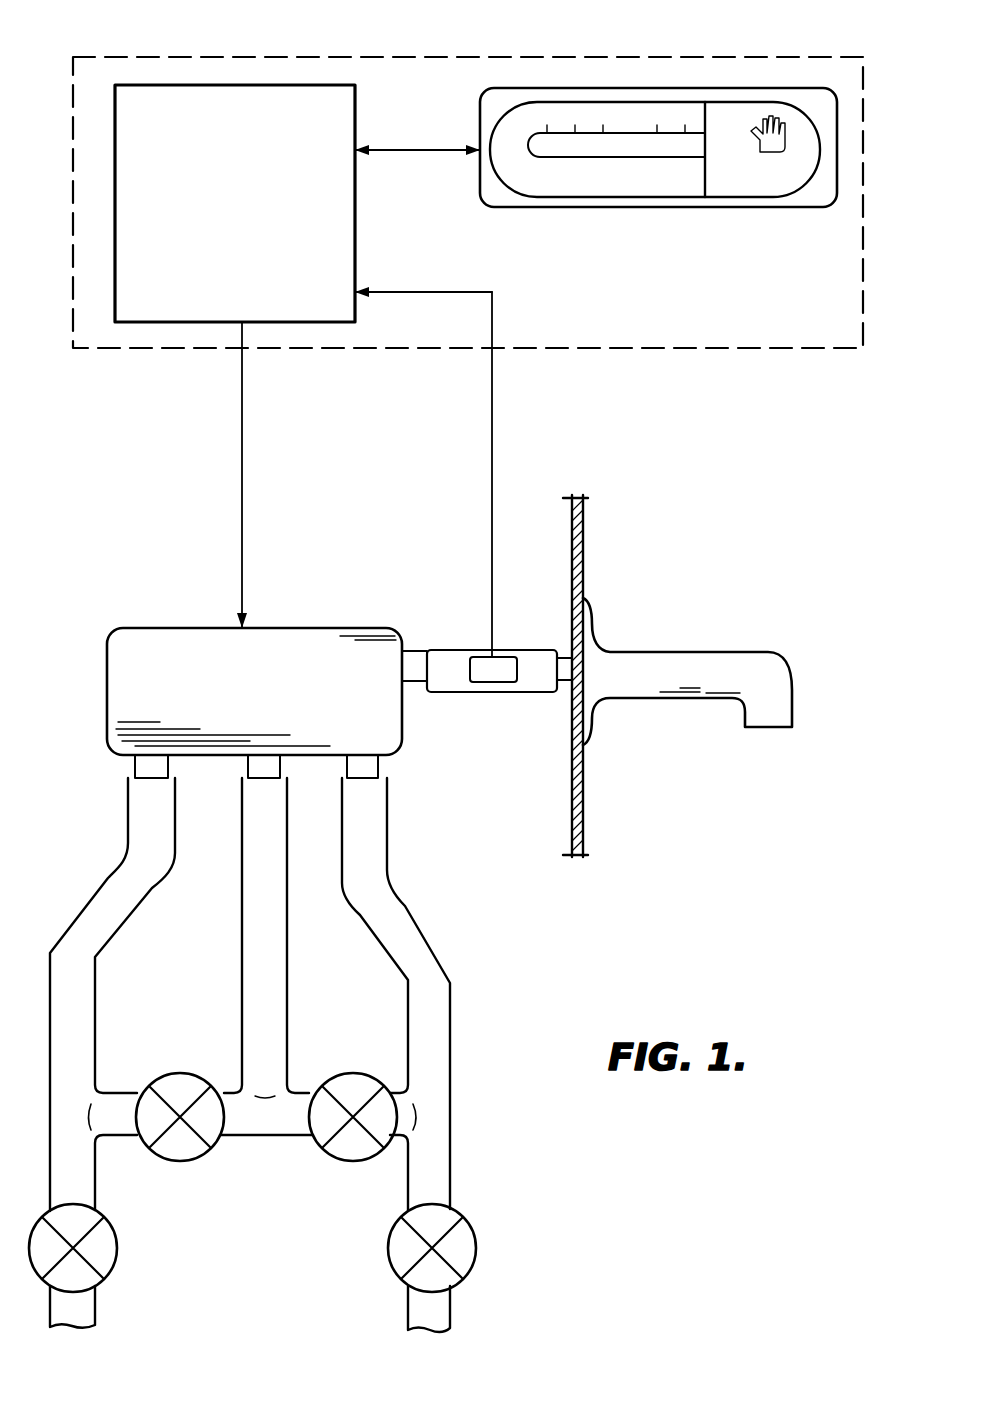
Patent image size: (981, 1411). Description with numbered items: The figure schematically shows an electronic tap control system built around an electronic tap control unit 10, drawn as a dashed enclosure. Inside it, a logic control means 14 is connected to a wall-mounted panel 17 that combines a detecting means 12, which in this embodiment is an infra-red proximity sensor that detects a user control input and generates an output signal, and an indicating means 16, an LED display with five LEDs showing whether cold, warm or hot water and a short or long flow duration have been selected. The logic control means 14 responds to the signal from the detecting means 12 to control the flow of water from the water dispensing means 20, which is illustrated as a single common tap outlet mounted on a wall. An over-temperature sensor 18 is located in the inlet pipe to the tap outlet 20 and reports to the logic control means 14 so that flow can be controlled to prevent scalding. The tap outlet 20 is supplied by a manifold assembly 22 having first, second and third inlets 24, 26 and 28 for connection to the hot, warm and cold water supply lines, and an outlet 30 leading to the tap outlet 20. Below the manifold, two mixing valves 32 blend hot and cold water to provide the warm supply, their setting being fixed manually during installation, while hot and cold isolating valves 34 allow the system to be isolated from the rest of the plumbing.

The electronic tap control unit 10 is at (707, 348).
The detecting means 12 is at (752, 177).
The logic control means 14 is at (235, 203).
The indicating means 16 is at (588, 173).
The wall-mounted panel 17 is at (633, 85).
The over-temperature sensor 18 is at (500, 665).
The water dispensing means 20 is at (690, 678).
The manifold assembly 22 is at (254, 703).
The first inlet 24 is at (145, 767).
The second inlet 26 is at (256, 768).
The third inlet 28 is at (373, 767).
The outlet 30 is at (413, 662).
The mixing valves 32 is at (338, 1147).
The hot and cold isolating valves 34 is at (108, 1252).